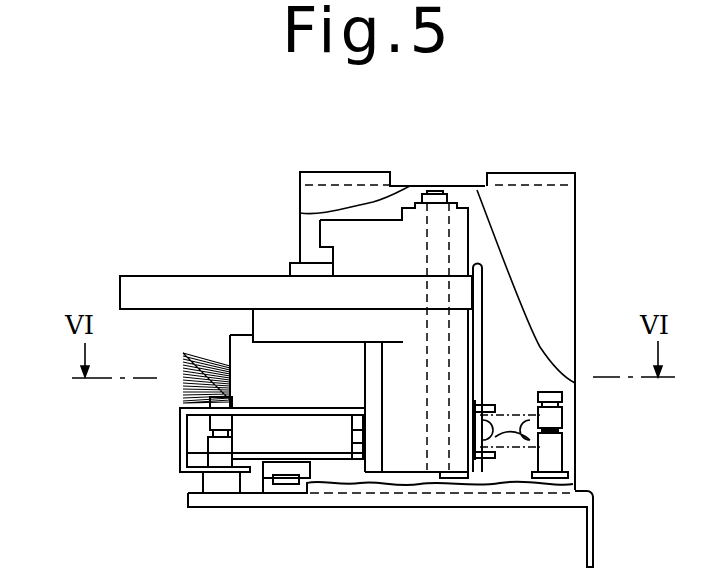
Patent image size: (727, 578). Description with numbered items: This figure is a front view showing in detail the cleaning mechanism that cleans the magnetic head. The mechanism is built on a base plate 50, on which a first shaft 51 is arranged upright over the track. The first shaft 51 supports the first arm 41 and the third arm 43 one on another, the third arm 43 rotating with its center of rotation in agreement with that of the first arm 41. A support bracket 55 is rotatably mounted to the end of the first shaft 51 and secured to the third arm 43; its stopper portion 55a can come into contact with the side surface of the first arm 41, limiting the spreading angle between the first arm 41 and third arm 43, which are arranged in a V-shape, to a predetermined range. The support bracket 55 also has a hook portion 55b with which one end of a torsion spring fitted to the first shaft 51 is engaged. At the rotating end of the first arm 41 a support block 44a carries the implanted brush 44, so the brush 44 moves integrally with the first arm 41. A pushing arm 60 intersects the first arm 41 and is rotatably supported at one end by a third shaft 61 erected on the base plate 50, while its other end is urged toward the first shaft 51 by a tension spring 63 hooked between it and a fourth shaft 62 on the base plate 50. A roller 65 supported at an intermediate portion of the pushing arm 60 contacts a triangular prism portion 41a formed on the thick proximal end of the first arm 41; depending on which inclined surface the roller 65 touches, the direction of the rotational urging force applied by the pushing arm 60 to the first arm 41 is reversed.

The first arm 41 is at (272, 318).
The triangular prism portion 41a is at (373, 407).
The third arm 43 is at (193, 290).
The brush 44 is at (182, 383).
The support block 44a is at (247, 357).
The base plate 50 is at (593, 527).
The first shaft 51 is at (437, 186).
The support bracket 55 is at (413, 220).
The stopper portion 55a is at (478, 297).
The hook portion 55b is at (338, 243).
The pushing arm 60 is at (178, 438).
The third shaft 61 is at (218, 452).
The fourth shaft 62 is at (555, 417).
The tension spring 63 is at (567, 453).
The roller 65 is at (358, 430).